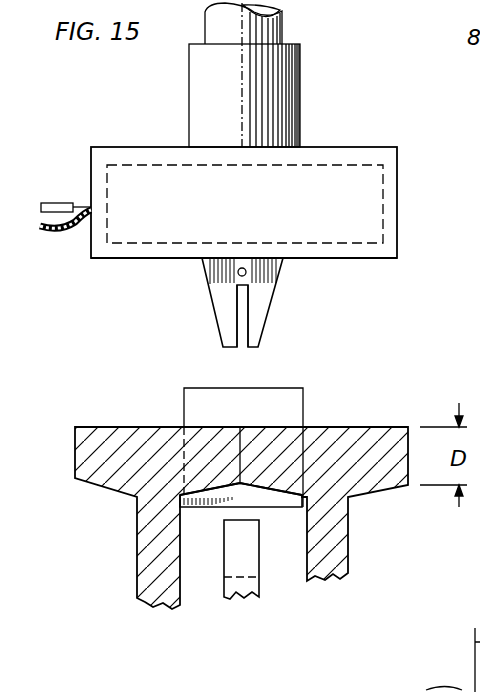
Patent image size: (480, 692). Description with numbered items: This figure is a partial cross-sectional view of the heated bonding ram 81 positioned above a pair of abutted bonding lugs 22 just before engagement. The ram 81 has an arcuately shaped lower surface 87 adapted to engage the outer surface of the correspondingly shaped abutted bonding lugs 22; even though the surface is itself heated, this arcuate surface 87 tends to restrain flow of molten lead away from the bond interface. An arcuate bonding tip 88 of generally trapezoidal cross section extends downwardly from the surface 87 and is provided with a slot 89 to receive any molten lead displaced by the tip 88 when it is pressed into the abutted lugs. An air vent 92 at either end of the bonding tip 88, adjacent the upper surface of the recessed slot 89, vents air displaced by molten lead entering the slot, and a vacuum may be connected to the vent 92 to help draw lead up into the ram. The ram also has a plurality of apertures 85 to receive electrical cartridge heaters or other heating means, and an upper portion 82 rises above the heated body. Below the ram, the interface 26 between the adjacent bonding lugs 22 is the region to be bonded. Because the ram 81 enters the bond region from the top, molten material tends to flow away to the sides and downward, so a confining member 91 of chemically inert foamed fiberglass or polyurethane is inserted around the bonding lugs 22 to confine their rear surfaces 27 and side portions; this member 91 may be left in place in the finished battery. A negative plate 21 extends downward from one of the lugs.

The ram 81 is at (349, 147).
The shaft / cable sleeve 82 is at (280, 22).
The apertures 85 is at (353, 208).
The arcuately shaped lower surface 87 is at (357, 254).
The arcuate bonding tip 88 is at (262, 310).
The slot 89 is at (240, 343).
The air vent 92 is at (236, 273).
The confining member 91 is at (290, 390).
The bonding lugs 22 is at (120, 432).
The interfaces 26 is at (238, 452).
The rear surfaces 27 is at (215, 492).
The negative plates 21 is at (232, 594).